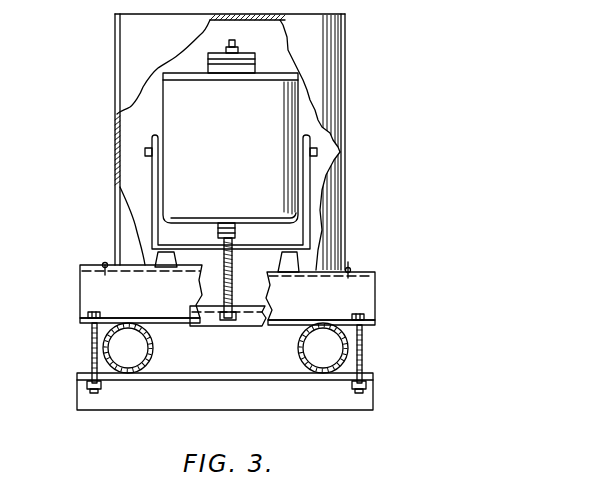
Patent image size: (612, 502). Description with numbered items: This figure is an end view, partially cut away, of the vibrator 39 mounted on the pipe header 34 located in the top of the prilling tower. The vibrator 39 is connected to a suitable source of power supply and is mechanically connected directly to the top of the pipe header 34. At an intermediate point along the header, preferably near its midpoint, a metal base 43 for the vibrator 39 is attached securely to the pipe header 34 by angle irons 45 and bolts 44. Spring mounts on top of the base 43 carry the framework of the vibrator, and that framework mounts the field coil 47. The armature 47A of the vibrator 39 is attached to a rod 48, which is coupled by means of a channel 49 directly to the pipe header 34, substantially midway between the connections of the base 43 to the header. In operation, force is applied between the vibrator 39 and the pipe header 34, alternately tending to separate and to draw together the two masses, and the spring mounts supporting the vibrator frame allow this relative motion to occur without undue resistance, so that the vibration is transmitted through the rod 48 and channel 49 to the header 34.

The vibrator 39 is at (360, 88).
The field coil 47 is at (237, 149).
The armature 47A is at (243, 62).
The base 43 is at (88, 284).
The bolts 44 is at (91, 346).
The pipe header 34 is at (153, 354).
The rod 48 is at (228, 281).
The channel 49 is at (243, 322).
The angle irons 45 is at (373, 399).